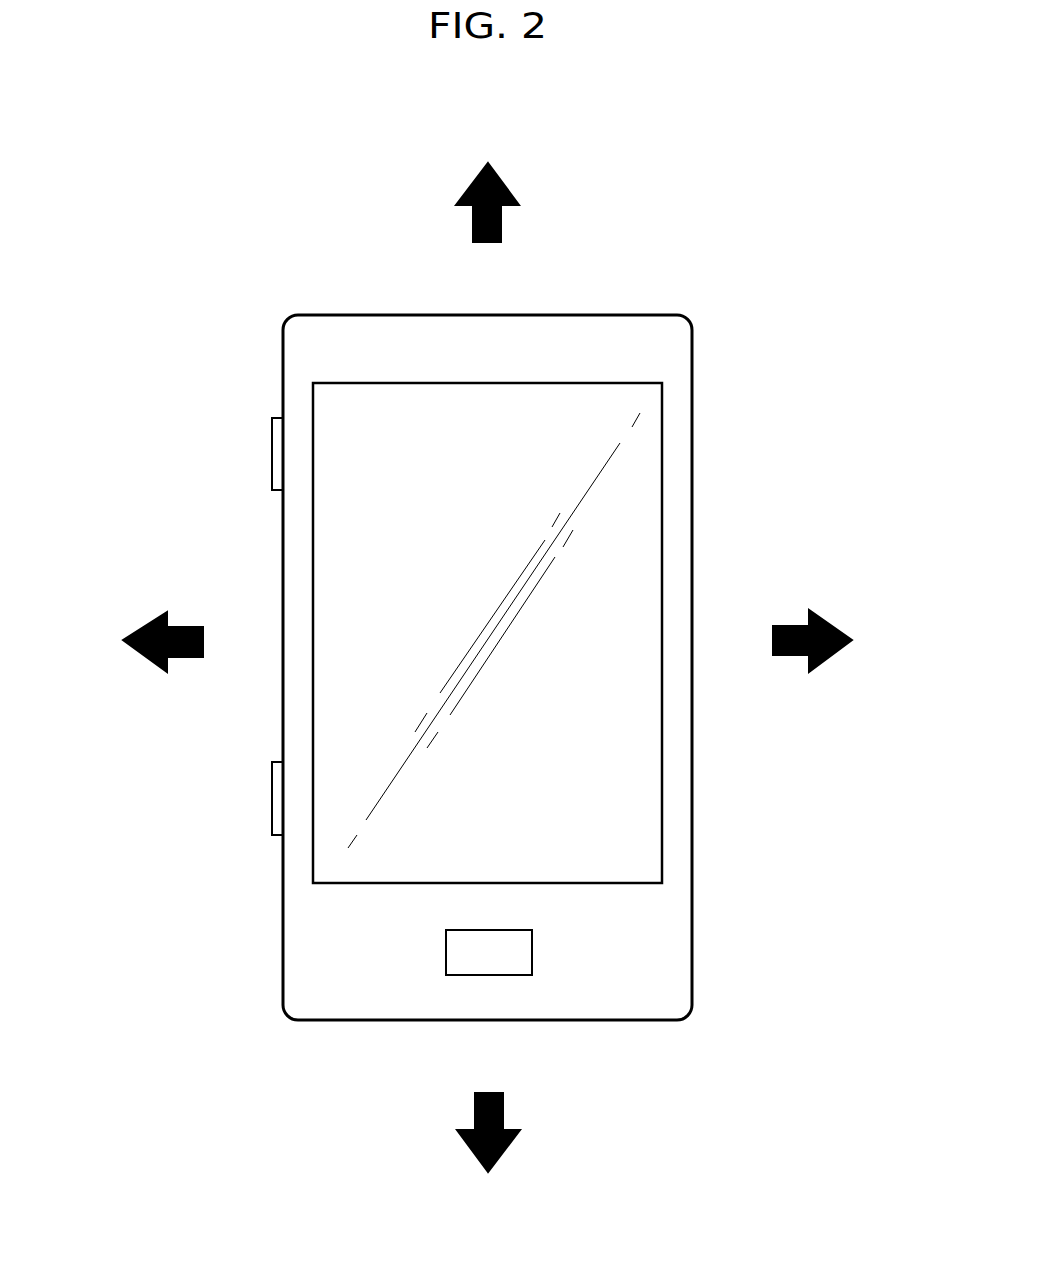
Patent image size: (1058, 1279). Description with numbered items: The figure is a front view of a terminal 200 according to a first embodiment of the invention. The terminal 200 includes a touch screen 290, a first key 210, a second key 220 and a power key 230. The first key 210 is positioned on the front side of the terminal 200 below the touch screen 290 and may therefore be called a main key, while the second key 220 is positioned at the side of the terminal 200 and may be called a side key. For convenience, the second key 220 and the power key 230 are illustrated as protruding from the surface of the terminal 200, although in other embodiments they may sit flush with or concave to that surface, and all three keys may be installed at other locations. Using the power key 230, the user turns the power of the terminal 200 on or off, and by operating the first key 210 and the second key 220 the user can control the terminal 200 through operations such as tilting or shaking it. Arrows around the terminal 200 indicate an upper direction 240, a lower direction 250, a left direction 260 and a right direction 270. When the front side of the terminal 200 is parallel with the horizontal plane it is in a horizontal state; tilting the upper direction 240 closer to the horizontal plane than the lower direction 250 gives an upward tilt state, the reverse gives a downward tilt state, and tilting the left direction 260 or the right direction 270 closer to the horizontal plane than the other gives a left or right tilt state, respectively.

The terminal 200 is at (577, 313).
The first key 210 is at (532, 952).
The second key 220 is at (272, 450).
The power key 230 is at (272, 797).
The upper direction 240 is at (505, 182).
The lower direction 250 is at (503, 1150).
The left direction 260 is at (147, 622).
The right direction 270 is at (835, 625).
The touch screen 290 is at (662, 485).